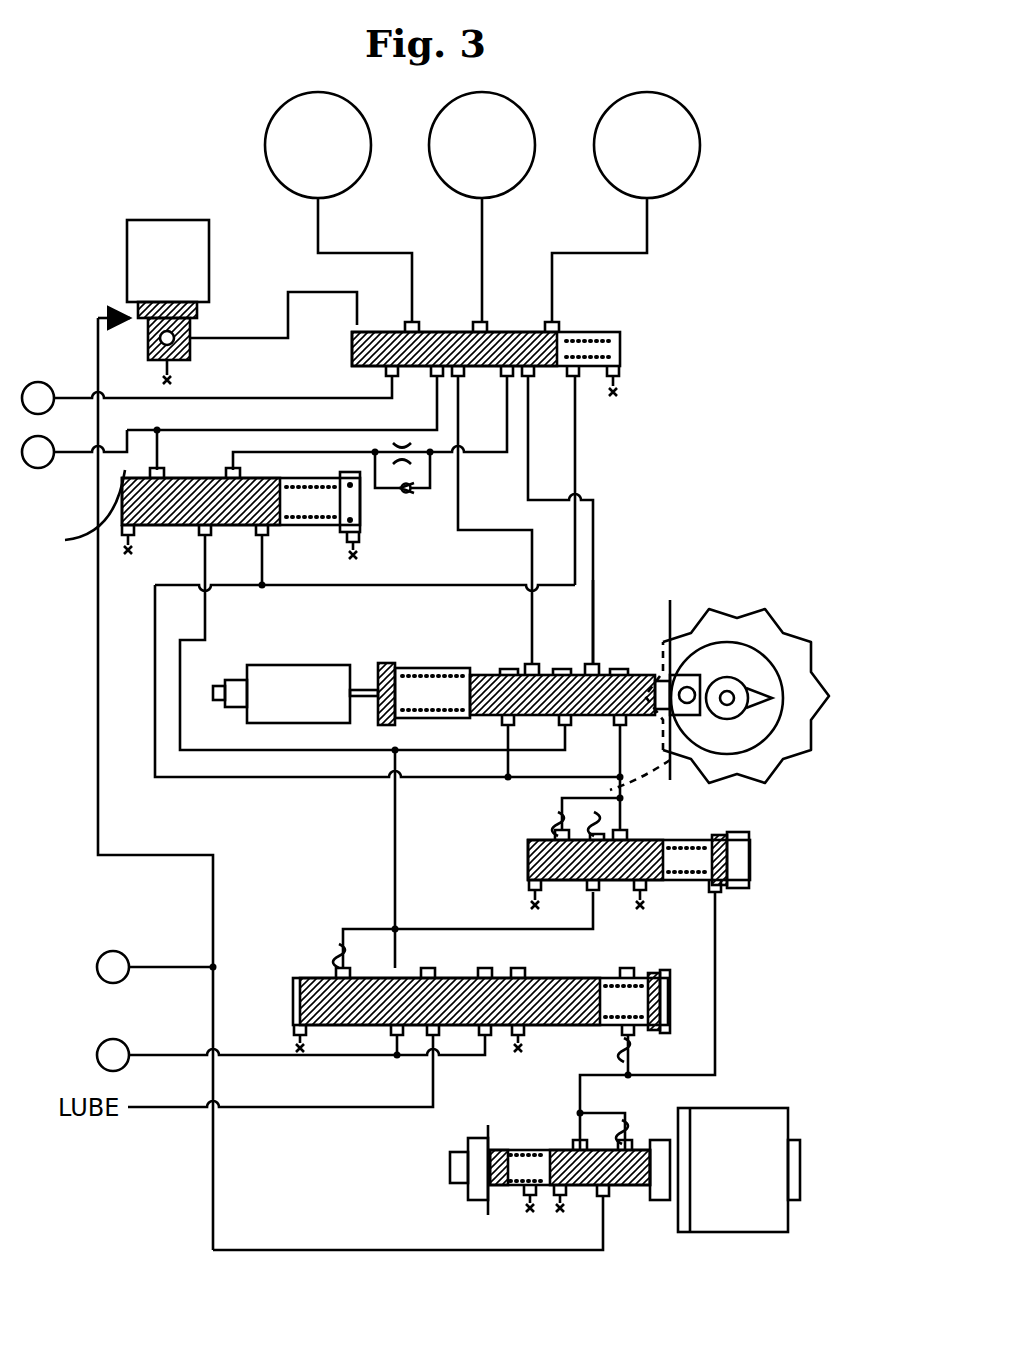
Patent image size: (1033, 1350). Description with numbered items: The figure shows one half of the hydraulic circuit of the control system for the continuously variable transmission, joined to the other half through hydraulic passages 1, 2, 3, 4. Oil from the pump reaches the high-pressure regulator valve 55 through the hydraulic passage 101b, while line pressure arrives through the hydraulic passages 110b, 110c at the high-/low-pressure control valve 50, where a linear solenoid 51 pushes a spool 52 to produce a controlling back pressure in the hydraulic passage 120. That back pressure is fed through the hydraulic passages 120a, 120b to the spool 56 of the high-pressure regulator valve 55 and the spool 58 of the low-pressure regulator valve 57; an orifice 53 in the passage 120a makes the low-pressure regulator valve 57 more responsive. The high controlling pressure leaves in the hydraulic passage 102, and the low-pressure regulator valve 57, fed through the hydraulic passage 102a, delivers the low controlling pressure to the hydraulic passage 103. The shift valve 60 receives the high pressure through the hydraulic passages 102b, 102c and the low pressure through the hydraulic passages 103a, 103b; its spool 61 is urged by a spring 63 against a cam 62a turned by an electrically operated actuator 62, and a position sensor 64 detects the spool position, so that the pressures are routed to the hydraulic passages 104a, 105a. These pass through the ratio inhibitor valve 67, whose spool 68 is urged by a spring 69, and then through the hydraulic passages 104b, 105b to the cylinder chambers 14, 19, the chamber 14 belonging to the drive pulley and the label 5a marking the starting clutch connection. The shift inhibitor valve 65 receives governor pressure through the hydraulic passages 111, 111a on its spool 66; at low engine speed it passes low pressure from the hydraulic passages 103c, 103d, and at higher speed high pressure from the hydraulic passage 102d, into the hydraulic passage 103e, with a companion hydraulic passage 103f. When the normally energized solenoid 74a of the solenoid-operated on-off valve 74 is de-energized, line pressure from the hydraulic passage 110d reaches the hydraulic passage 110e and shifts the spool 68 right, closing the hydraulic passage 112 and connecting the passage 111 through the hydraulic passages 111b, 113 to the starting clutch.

The clutch 5a is at (340, 170).
The cylinder chamber 14 is at (504, 170).
The cylinder chamber 19 is at (669, 170).
The solenoid-operated on-off valve 74 is at (118, 240).
The solenoid 74a is at (207, 261).
The hydraulic passage 113 is at (366, 242).
The hydraulic passage 104b is at (487, 232).
The hydraulic passage 105b is at (652, 232).
The ratio inhibitor valve 67 is at (534, 339).
The spool 68 is at (487, 326).
The spring 69 is at (607, 328).
The hydraulic passage 112 is at (90, 392).
The hydraulic passage 110d is at (108, 824).
The hydraulic passage 110c is at (387, 1250).
The hydraulic passage 110e is at (230, 338).
The hydraulic passage 110b is at (150, 970).
The hydraulic passage 4 is at (38, 398).
The hydraulic passage 3 is at (38, 452).
The hydraulic passage 2 is at (113, 967).
The hydraulic passage 1 is at (113, 1055).
The hydraulic passage 111 is at (66, 452).
The hydraulic passage 111a is at (71, 509).
The hydraulic passage 111b is at (260, 430).
The shift inhibitor valve 65 is at (191, 539).
The spool 66 is at (241, 523).
The hydraulic passage 103e is at (476, 454).
The hydraulic passage 103f is at (577, 458).
The hydraulic passage 105a is at (595, 584).
The hydraulic passage 104a is at (516, 598).
The hydraulic passage 103c is at (266, 780).
The hydraulic passage 103 is at (620, 800).
The hydraulic passage 103b is at (512, 770).
The hydraulic passage 103d is at (265, 548).
The hydraulic passage 102d is at (207, 622).
The hydraulic passage 102c is at (466, 768).
The hydraulic passage 102b is at (397, 903).
The hydraulic passage 102 is at (397, 952).
The hydraulic passage 102a is at (546, 932).
The spool 61 is at (441, 679).
The spring 63 is at (408, 666).
The position sensor 64 is at (302, 664).
The shift valve 60 is at (770, 658).
The electrically operated actuator 62 is at (793, 702).
The cam 62a is at (752, 714).
The hydraulic passage 103a is at (676, 782).
The low-pressure regulator valve 57 is at (675, 881).
The spool 58 is at (654, 892).
The hydraulic passage 101b is at (330, 1056).
The high-pressure regulator valve 55 is at (533, 1023).
The spool 56 is at (476, 1032).
The orifice 53 is at (624, 1048).
The hydraulic passage 120b is at (722, 1038).
The hydraulic passage 120a is at (632, 1046).
The hydraulic passage 120 is at (578, 1110).
The high-/low-pressure control valve 50 is at (651, 1166).
The linear solenoid 51 is at (732, 1232).
The spool 52 is at (612, 1190).